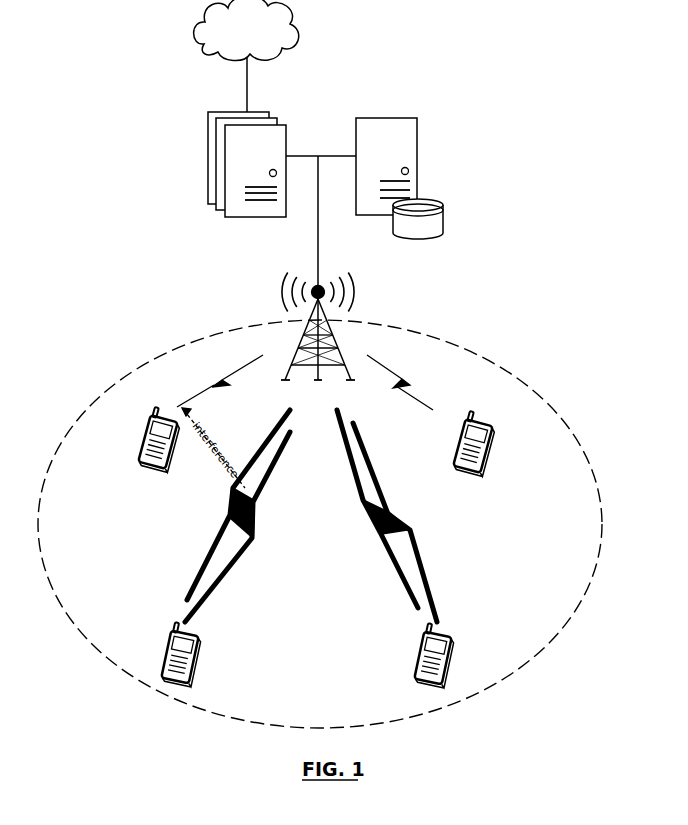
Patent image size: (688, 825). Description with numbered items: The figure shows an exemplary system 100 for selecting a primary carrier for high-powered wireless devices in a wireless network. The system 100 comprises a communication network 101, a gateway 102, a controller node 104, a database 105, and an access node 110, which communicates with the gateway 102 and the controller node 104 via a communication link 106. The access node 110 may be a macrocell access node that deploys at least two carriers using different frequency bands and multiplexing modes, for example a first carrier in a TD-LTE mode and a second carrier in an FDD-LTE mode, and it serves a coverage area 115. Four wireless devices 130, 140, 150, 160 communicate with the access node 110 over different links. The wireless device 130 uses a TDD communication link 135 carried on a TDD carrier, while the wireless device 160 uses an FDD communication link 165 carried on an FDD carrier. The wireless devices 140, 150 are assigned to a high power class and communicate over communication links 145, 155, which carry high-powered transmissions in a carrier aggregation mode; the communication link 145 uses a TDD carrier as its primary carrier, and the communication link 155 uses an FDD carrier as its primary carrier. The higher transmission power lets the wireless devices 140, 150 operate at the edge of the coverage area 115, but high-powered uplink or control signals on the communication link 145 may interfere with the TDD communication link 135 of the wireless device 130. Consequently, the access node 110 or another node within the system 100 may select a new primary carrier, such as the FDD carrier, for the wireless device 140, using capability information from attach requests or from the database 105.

The system 100 is at (345, 64).
The communication network 101 is at (262, 39).
The gateway 102 is at (210, 112).
The controller node 104 is at (418, 118).
The database 105 is at (441, 200).
The communication link 106 is at (318, 234).
The access node 110 is at (303, 348).
The coverage area 115 is at (378, 322).
The wireless device 130 is at (143, 458).
The TDD communication link 135 is at (200, 390).
The wireless device 140 is at (165, 668).
The communication link 145 is at (262, 498).
The wireless device 150 is at (448, 672).
The communication link 155 is at (380, 538).
The wireless device 160 is at (487, 465).
The FDD communication link 165 is at (400, 383).